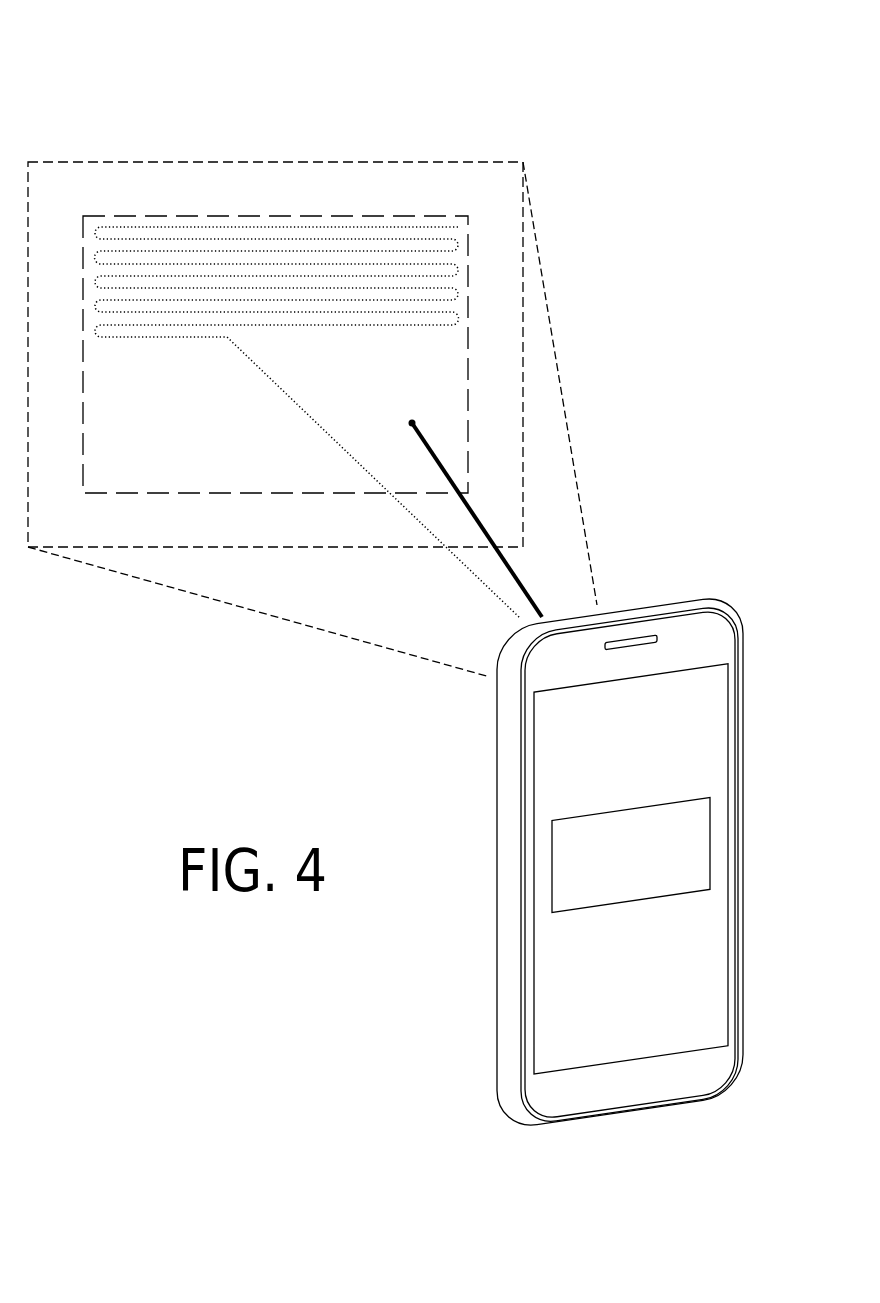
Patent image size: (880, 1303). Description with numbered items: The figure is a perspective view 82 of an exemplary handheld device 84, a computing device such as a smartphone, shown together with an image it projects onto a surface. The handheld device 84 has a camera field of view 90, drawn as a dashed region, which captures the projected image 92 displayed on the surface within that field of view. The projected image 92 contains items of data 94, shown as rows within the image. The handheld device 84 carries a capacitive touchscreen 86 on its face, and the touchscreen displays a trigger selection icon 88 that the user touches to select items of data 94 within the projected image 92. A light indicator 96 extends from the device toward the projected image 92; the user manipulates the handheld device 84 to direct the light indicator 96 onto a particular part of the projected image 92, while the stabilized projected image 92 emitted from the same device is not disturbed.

The perspective view 82 is at (75, 80).
The handheld device 84 is at (702, 604).
The capacitive touchscreen 86 is at (710, 732).
The trigger selection icon 88 is at (688, 818).
The camera field of view 90 is at (494, 161).
The projected image 92 is at (437, 215).
The items of data 94 is at (175, 338).
The light indicator 96 is at (436, 455).